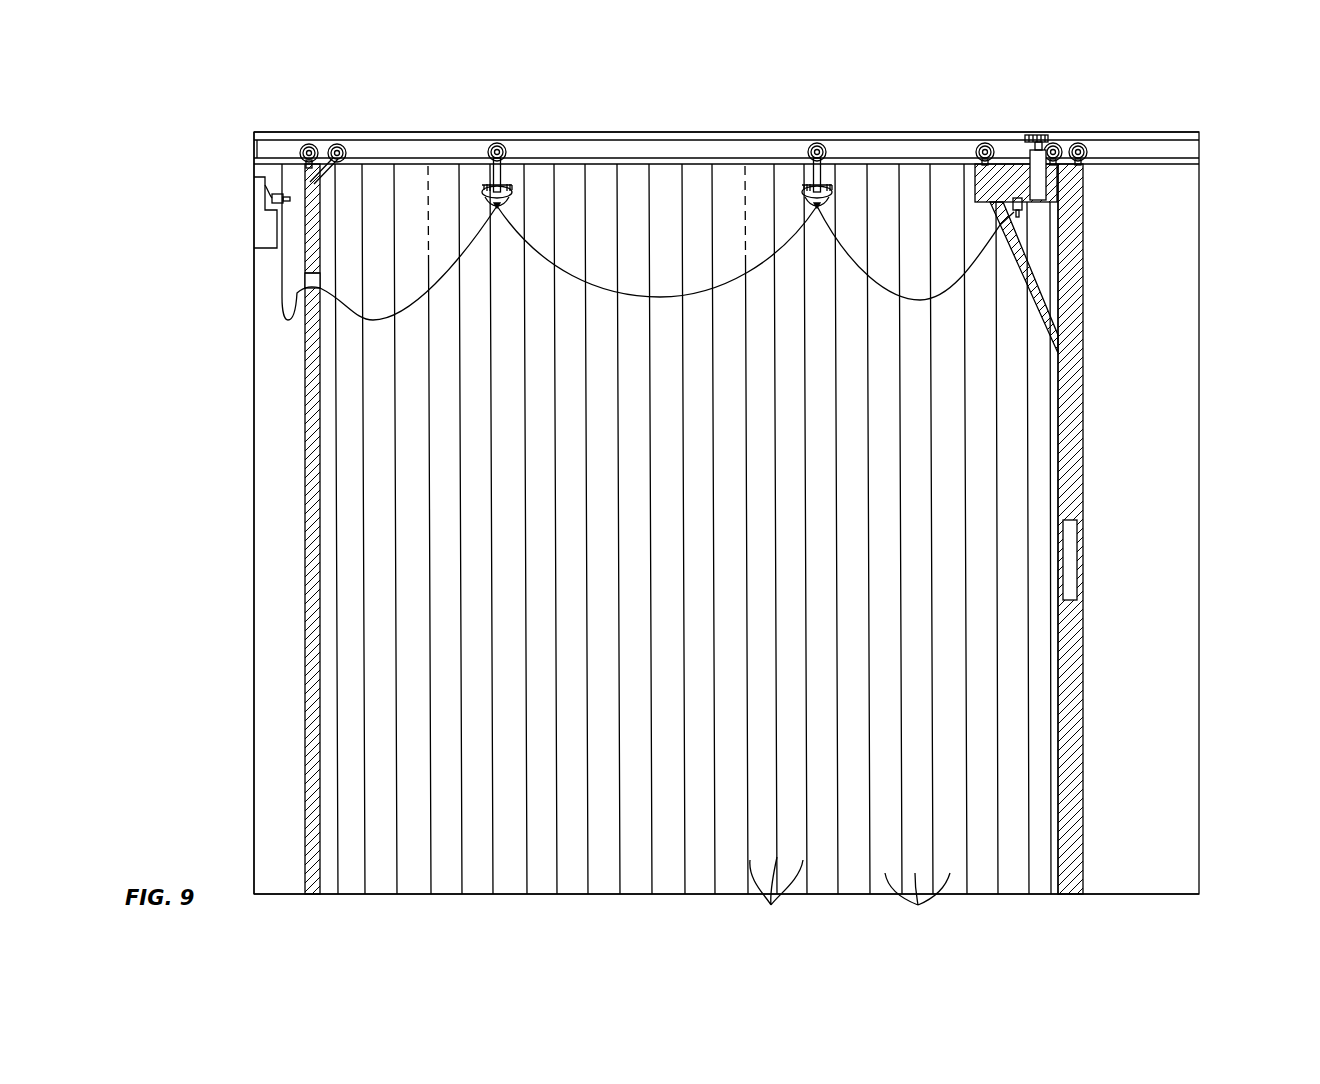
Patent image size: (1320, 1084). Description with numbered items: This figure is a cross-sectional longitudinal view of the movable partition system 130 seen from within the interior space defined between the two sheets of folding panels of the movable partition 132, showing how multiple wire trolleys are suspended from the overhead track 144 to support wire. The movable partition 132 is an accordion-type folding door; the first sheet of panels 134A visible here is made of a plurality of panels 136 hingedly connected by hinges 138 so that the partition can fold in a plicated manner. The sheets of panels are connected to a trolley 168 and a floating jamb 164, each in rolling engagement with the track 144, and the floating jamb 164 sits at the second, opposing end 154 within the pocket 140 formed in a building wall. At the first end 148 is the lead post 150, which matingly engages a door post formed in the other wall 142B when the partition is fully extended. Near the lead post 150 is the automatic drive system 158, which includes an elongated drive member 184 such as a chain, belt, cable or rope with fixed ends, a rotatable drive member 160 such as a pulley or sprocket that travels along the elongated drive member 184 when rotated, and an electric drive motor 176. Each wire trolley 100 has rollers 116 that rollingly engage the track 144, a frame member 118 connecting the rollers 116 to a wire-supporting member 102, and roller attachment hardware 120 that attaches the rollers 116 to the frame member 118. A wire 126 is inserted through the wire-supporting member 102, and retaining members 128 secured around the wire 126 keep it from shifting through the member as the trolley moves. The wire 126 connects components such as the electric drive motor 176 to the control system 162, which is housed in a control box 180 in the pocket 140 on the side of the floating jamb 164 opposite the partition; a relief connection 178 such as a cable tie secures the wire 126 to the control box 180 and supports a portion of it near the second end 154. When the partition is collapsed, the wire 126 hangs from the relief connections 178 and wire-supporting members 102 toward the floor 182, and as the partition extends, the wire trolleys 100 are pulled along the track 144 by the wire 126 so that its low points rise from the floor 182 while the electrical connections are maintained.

The wire trolley 100 is at (482, 181).
The wire-supporting member 102 is at (513, 191).
The roller 116 is at (300, 147).
The frame member 118 is at (501, 172).
The roller attachment hardware 120 is at (487, 147).
The wire 126 is at (658, 298).
The retaining member 128 is at (494, 207).
The movable partition system 130 is at (1223, 356).
The movable partition 132 is at (1013, 778).
The first sheet of panels 134A is at (693, 504).
The panel 136 is at (917, 903).
The hinge 138 is at (776, 895).
The pocket 140 is at (265, 530).
The wall 142B is at (1198, 606).
The track 144 is at (1150, 166).
The first end 148 is at (1096, 430).
The lead post 150 is at (1075, 672).
The second, opposing end 154 is at (298, 463).
The automatic drive system 158 is at (1020, 150).
The rotatable drive member 160 is at (1039, 135).
The control system 162 is at (253, 192).
The floating jamb 164 is at (305, 402).
The trolley 168 is at (1062, 172).
The electric drive motor 176 is at (1040, 192).
The relief connection 178 is at (290, 199).
The control box 180 is at (254, 248).
The floor 182 is at (1128, 892).
The elongated drive member 184 is at (666, 132).